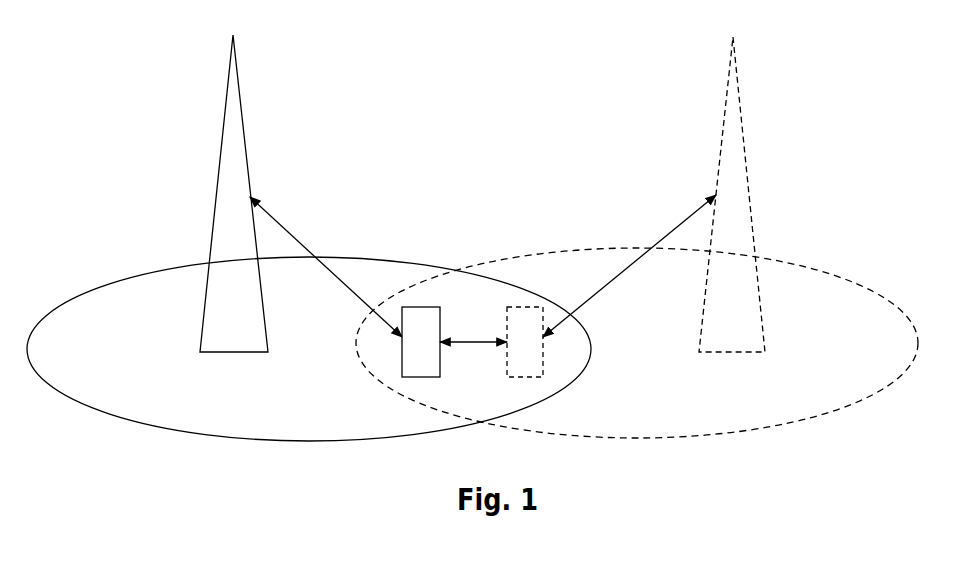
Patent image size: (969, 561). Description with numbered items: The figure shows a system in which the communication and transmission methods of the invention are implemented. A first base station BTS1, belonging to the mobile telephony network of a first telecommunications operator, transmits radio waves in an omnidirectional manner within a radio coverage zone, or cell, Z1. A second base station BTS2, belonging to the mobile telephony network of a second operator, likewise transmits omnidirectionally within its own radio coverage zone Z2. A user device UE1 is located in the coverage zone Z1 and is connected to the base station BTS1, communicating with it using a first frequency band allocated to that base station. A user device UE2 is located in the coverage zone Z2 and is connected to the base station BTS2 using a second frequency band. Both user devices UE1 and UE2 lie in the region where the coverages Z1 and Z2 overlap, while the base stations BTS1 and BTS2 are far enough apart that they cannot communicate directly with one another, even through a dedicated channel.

The first base station BTS1 is at (252, 148).
The second base station BTS2 is at (748, 160).
The user device UE1 is at (420, 307).
The user device UE2 is at (525, 307).
The radio coverage zone Z1 is at (309, 349).
The radio coverage zone Z2 is at (637, 343).